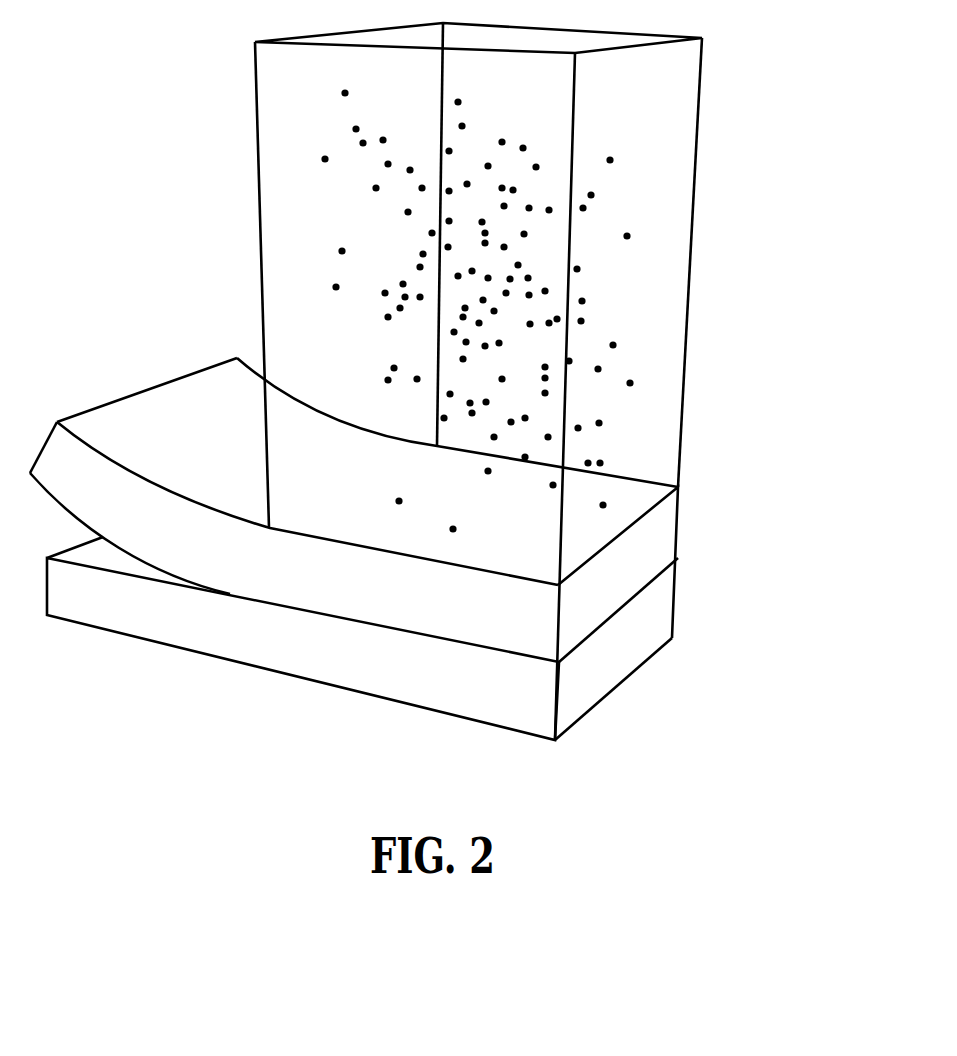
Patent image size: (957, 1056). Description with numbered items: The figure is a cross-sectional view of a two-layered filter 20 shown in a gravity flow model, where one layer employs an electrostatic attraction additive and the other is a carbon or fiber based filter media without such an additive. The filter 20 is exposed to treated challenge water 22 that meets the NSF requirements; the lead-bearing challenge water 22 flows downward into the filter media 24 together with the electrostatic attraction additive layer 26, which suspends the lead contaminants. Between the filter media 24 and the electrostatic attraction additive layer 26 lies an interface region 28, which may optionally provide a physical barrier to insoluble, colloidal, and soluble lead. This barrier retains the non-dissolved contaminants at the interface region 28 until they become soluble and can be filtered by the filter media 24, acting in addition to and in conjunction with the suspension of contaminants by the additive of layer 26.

The filter 20 is at (417, 381).
The treated challenge water 22 is at (640, 317).
The filter media 24 is at (359, 638).
The electrostatic attraction additive layer 26 is at (623, 597).
The interface region 28 is at (678, 530).